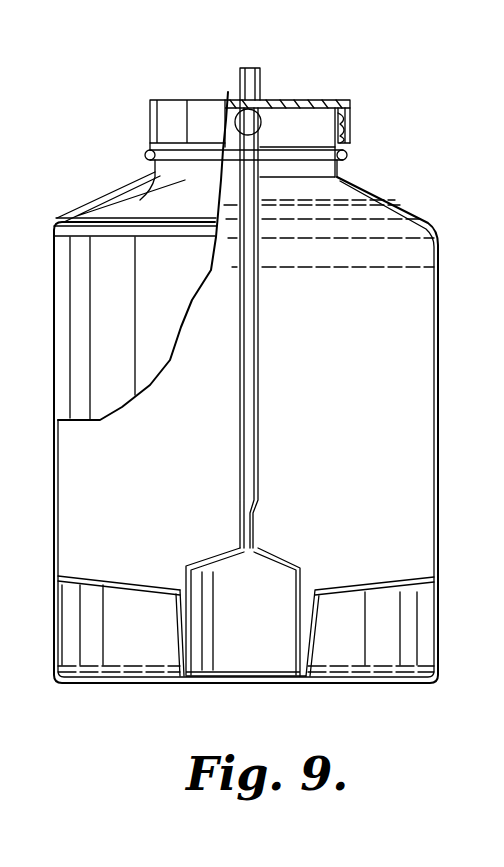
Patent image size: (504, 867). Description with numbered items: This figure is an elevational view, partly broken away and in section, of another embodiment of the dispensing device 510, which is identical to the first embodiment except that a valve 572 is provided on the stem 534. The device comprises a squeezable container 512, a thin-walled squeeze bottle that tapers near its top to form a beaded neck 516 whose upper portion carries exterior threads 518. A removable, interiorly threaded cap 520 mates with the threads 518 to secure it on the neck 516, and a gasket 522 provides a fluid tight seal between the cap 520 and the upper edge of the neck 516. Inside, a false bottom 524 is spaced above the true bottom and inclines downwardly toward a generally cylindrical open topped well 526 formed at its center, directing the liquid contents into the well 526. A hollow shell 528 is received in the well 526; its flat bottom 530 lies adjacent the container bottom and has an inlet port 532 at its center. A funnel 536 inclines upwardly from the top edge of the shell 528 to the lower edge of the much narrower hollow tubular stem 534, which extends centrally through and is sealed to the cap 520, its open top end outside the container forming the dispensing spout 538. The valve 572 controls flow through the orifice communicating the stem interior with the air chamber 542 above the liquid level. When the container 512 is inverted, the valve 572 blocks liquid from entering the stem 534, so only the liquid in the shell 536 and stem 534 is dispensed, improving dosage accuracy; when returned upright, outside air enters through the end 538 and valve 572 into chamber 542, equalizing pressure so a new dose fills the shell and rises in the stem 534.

The dispensing device 510 is at (462, 171).
The container 512 is at (441, 384).
The beaded neck 516 is at (346, 156).
The threads 518 is at (349, 136).
The cap 520 is at (188, 100).
The gasket 522 is at (317, 100).
The false bottom 524 is at (122, 584).
The well 526 is at (300, 612).
The shell 528 is at (180, 618).
The flat bottom of shell 530 is at (284, 682).
The inlet port 532 is at (247, 680).
The stem 534 is at (258, 356).
The funnel 536 is at (280, 562).
The dispensing spout 538 is at (250, 68).
The air chamber 542 is at (326, 201).
The valve 572 is at (262, 122).